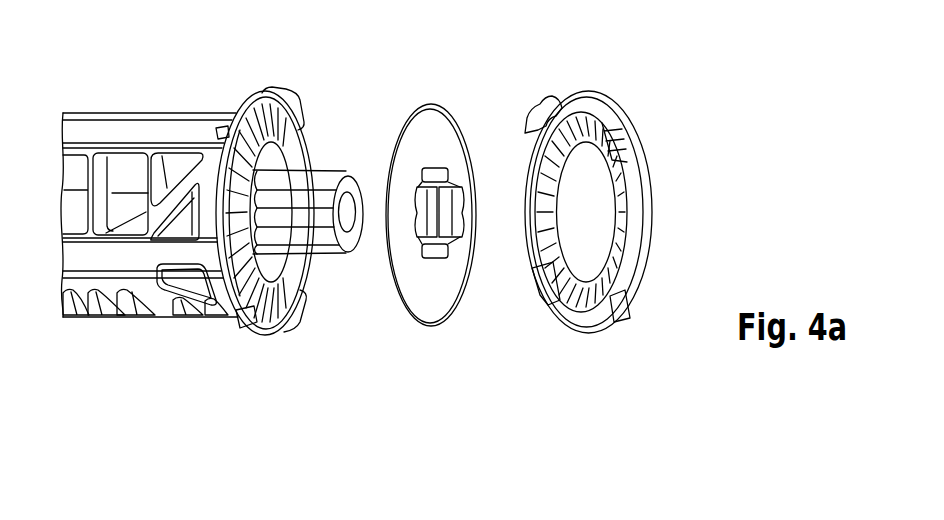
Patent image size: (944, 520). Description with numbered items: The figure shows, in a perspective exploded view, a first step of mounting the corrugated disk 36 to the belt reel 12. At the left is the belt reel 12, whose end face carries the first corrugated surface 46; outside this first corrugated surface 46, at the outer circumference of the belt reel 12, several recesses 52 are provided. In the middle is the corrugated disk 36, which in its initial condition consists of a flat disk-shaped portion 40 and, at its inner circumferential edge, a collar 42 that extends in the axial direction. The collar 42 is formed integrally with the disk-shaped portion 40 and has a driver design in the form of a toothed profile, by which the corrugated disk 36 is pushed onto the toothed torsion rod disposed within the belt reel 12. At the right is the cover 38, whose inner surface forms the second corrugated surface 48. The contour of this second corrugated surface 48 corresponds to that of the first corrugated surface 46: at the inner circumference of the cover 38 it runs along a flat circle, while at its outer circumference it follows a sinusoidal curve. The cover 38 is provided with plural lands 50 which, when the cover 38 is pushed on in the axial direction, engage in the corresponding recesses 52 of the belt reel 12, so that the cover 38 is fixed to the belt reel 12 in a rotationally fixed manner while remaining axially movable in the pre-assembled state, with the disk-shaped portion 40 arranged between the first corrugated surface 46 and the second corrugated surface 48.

The belt reel 12 is at (148, 120).
The corrugated disk 36 is at (453, 97).
The cover 38 is at (604, 86).
The disk-shaped portion 40 is at (437, 128).
The collar 42 is at (434, 168).
The first corrugated surface 46 is at (265, 100).
The second corrugated surface 48 is at (550, 108).
The lands 50 is at (546, 292).
The recesses 52 is at (298, 108).